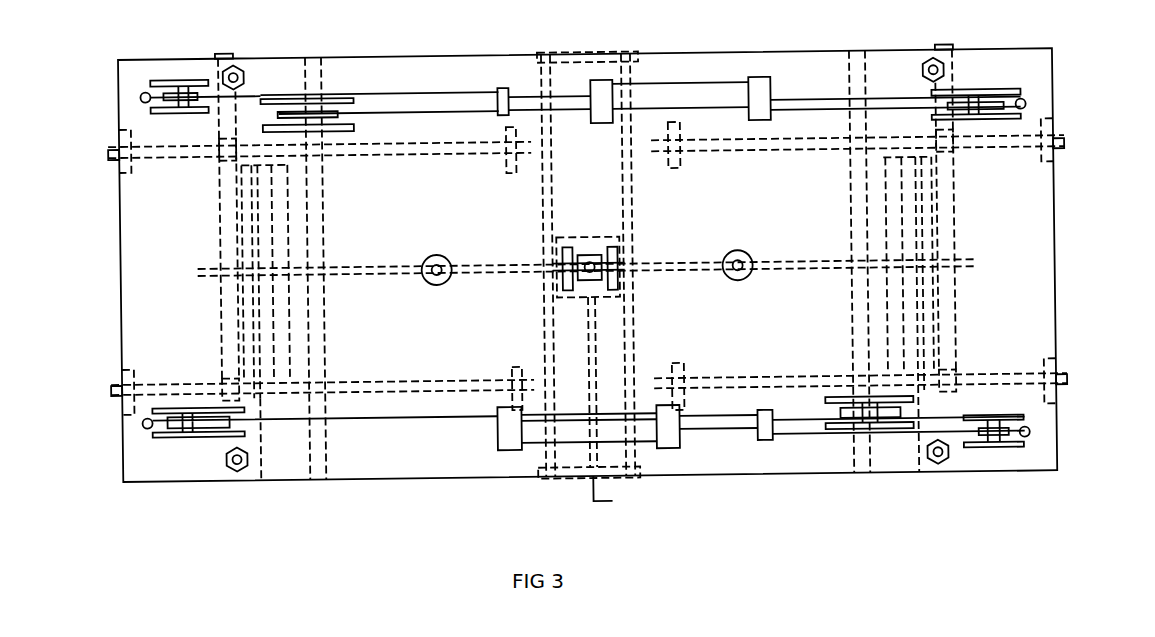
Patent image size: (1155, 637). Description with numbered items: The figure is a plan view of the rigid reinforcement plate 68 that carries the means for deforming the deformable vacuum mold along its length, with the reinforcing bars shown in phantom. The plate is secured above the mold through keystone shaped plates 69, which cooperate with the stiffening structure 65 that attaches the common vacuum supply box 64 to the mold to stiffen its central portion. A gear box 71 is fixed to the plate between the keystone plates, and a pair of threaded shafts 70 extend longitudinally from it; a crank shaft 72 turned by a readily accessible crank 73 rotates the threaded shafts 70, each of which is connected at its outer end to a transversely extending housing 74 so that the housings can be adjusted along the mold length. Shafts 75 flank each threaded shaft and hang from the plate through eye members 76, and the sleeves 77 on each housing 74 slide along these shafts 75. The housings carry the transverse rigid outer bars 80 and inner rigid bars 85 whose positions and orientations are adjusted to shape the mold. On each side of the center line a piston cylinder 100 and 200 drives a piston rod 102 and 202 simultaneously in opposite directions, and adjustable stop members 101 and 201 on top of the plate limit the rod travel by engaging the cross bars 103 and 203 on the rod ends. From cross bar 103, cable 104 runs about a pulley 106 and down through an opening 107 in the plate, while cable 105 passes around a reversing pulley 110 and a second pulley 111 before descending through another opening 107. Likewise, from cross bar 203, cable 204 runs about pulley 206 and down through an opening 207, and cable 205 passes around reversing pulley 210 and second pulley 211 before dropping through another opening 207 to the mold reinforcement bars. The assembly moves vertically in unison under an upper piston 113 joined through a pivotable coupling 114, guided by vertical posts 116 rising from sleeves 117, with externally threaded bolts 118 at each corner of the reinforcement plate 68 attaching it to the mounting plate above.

The common vacuum supply box 64 is at (651, 264).
The stiffening structure 65 is at (615, 265).
The reinforcement plate 68 is at (940, 197).
The keystone shaped plates 69 is at (604, 262).
The threaded shafts 70 is at (587, 253).
The gear box 71 is at (588, 250).
The crank shaft 72 is at (630, 381).
The crank 73 is at (587, 502).
The transversely extending housing 74 is at (587, 265).
The shafts 75 is at (587, 265).
The eye members 76 is at (552, 310).
The sleeves 77 is at (280, 315).
The transverse rigid outer bar 80 is at (606, 335).
The inner rigid bar 85 is at (613, 281).
The piston cylinder 100 is at (566, 457).
The adjustable stop member 101 is at (884, 461).
The piston rod 102 is at (707, 436).
The cross bar 103 is at (784, 440).
The cable 104 is at (866, 463).
The cable 105 is at (845, 385).
The pulley 106 is at (1021, 460).
The opening 107 is at (587, 435).
The reversing pulley 110 is at (928, 403).
The second pulley 111 is at (312, 458).
The upper piston 113 is at (588, 231).
The pivotable coupling 114 is at (635, 279).
The vertical posts 116 is at (416, 288).
The sleeves 117 is at (763, 251).
The externally threaded bolts 118 is at (212, 479).
The piston cylinder 200 is at (816, 68).
The adjustable stop member 201 is at (549, 69).
The piston rod 202 is at (604, 67).
The cross bar 203 is at (518, 58).
The cable 204 is at (257, 37).
The cable 205 is at (317, 52).
The pulley 206 is at (194, 70).
The opening 207 is at (590, 88).
The reversing pulley 210 is at (302, 79).
The second pulley 211 is at (987, 78).